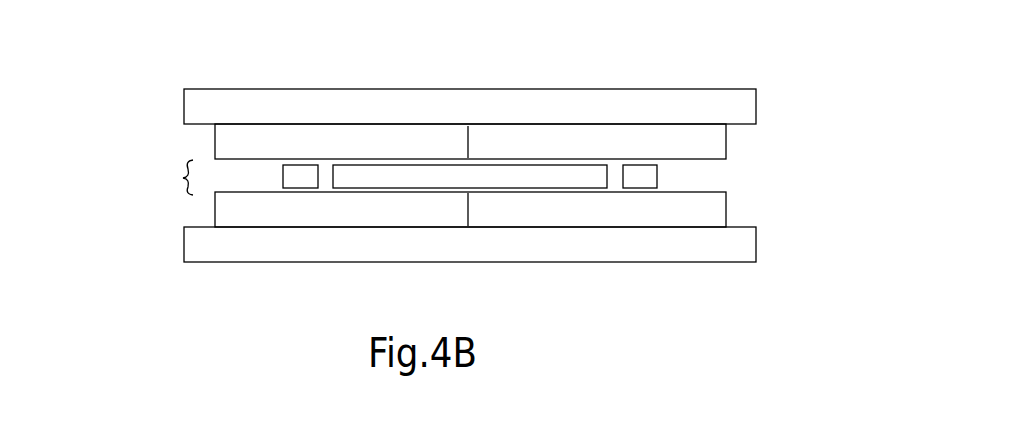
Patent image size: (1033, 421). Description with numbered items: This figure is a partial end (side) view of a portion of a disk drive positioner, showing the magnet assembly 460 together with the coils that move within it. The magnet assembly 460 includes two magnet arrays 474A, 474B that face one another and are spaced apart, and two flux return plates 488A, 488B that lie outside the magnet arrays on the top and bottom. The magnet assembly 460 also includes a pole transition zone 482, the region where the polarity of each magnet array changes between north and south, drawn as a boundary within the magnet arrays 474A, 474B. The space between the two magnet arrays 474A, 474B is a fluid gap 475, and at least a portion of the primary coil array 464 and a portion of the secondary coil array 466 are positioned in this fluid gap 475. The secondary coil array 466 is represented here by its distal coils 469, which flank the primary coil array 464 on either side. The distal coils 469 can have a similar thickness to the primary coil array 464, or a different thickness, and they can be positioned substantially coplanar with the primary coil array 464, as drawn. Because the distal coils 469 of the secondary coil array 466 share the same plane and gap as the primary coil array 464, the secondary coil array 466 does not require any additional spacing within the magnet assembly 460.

The magnet assembly 460 is at (196, 209).
The primary coil array 464 is at (515, 177).
The secondary coil array 466 is at (692, 175).
The distal coils 469 is at (298, 173).
The magnet array 474A is at (728, 137).
The magnet array 474B is at (727, 208).
The fluid gap 475 is at (161, 177).
The pole transition zone 482 is at (468, 220).
The flux return plate 488A is at (758, 103).
The flux return plate 488B is at (738, 243).